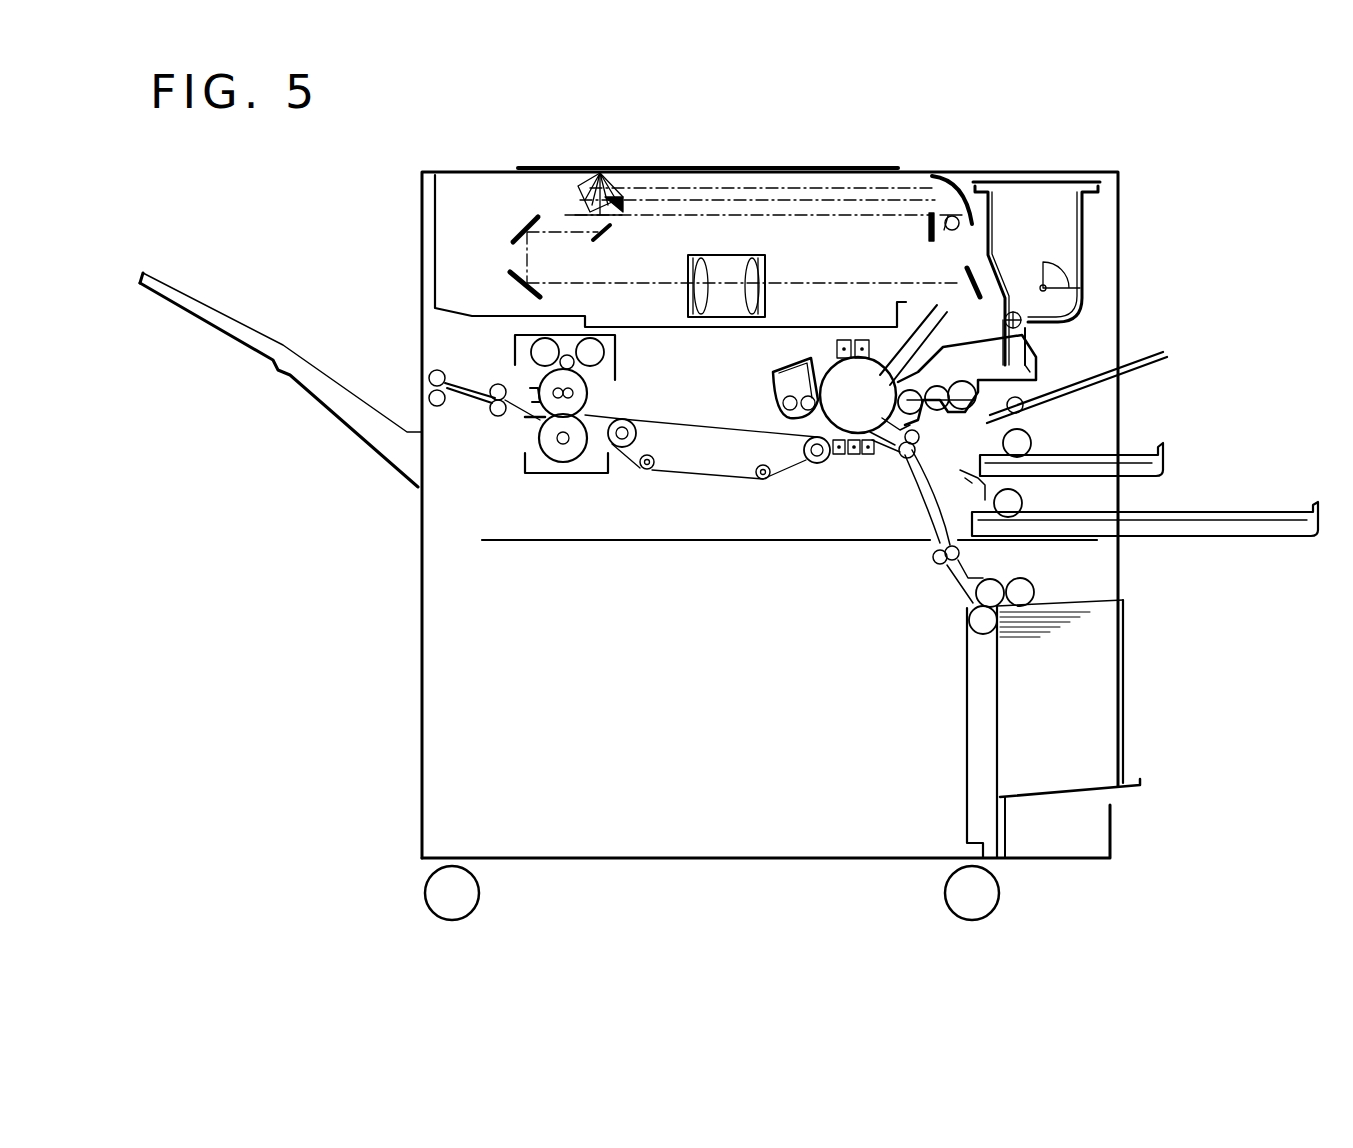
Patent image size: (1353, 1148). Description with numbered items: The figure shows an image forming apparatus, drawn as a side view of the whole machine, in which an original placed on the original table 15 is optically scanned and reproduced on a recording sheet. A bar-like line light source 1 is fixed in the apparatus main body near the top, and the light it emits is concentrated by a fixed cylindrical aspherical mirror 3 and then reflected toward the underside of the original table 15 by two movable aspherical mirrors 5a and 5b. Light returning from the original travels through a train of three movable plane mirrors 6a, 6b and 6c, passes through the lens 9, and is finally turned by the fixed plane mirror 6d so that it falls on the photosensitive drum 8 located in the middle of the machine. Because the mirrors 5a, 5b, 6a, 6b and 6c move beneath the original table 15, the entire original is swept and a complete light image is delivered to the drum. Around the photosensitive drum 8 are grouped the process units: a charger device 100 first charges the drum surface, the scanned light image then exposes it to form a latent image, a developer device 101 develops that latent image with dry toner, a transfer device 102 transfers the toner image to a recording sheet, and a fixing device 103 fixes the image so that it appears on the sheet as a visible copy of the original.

The line light source 1 is at (942, 218).
The fixed cylindrical aspherical mirror 3 is at (950, 176).
The movable aspherical mirror 5a is at (620, 200).
The movable aspherical mirror 5b is at (580, 200).
The movable plane mirror 6a is at (610, 240).
The movable plane mirror 6b is at (518, 238).
The movable plane mirror 6c is at (505, 283).
The fixed plane mirror 6d is at (985, 272).
The photosensitive drum 8 is at (935, 365).
The lens 9 is at (718, 255).
The original table 15 is at (780, 168).
The charger device 100 is at (842, 360).
The developer device 101 is at (1030, 368).
The transfer device 102 is at (870, 460).
The fixing device 103 is at (600, 470).